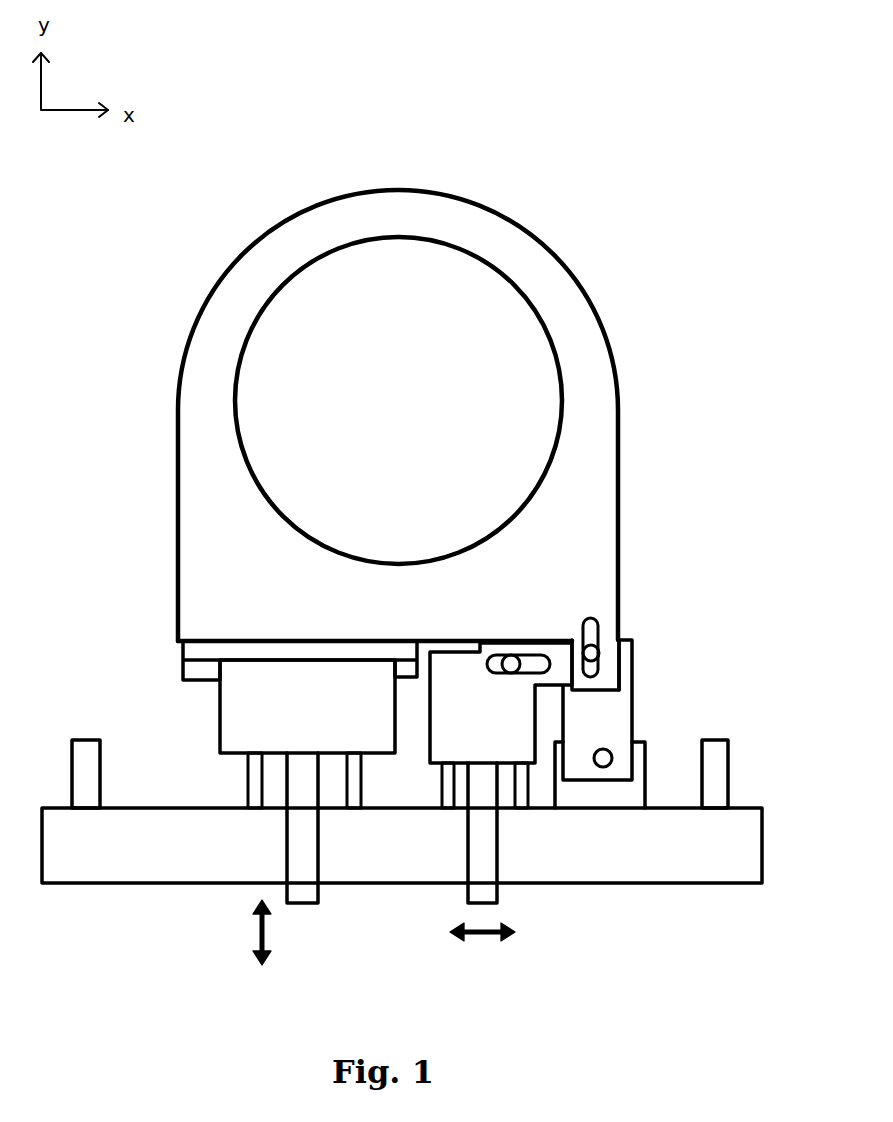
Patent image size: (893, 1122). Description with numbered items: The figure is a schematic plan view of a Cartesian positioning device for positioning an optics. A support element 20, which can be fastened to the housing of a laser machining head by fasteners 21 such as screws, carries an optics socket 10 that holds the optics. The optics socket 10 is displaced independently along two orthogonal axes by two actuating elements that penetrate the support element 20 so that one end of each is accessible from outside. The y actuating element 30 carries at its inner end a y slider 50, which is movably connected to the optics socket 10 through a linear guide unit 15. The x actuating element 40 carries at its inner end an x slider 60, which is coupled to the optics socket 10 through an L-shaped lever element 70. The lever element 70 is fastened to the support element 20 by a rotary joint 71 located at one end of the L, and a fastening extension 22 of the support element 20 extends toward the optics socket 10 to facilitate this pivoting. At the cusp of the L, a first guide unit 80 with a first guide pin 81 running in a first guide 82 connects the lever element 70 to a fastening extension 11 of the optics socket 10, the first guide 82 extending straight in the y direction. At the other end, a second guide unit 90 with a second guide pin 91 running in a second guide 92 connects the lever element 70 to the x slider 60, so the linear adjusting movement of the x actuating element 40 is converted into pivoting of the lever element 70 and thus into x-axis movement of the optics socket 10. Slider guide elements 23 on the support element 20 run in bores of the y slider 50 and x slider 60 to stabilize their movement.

The optics socket 10 is at (595, 345).
The fastening extension 11 is at (633, 662).
The linear guide unit 15 is at (167, 671).
The support element 20 is at (727, 857).
The fasteners 21 is at (70, 775).
The fastening extension 22 is at (630, 797).
The slider guide elements 23 is at (258, 782).
The y actuating element 30 is at (302, 890).
The x actuating element 40 is at (483, 890).
The y slider 50 is at (250, 707).
The x slider 60 is at (440, 712).
The lever element 70 is at (600, 717).
The rotary joint 71 is at (613, 753).
The first guide unit 80 is at (663, 643).
The first guide pin 81 is at (596, 653).
The first guide 82 is at (598, 630).
The second guide unit 90 is at (603, 604).
The second guide pin 91 is at (528, 665).
The second guide 92 is at (535, 655).